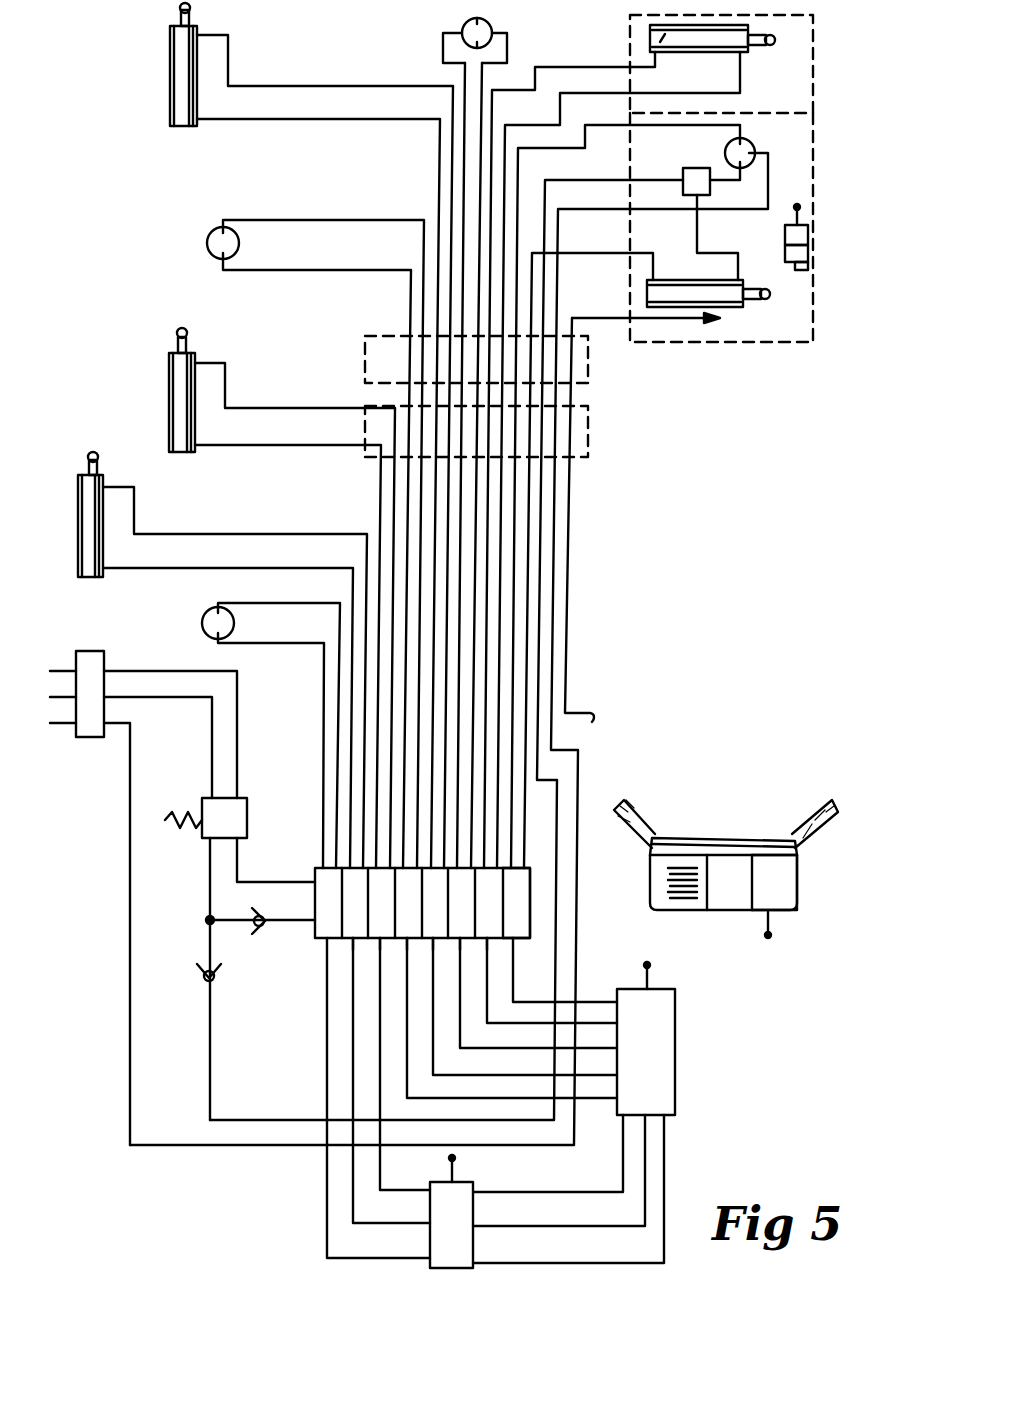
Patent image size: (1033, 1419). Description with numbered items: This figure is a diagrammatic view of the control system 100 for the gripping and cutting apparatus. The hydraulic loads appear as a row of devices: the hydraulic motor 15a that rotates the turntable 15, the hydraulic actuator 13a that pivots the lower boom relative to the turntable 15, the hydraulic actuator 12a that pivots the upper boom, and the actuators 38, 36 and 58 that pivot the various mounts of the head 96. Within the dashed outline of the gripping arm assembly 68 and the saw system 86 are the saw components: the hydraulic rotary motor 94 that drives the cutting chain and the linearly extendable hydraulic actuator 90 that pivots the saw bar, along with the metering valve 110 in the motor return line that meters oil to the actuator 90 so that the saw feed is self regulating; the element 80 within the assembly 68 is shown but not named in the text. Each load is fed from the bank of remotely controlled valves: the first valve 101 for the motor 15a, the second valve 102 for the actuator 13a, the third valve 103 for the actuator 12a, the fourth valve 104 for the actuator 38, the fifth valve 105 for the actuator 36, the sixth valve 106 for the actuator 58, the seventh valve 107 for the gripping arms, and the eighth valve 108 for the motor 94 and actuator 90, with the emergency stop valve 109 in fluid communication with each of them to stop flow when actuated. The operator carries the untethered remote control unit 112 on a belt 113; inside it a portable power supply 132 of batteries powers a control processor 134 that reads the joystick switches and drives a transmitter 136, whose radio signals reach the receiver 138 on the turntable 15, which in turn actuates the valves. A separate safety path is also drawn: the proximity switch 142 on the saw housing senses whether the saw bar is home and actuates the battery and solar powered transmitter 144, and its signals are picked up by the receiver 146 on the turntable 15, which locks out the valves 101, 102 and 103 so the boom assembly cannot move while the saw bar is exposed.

The hydraulic actuator 12a is at (170, 370).
The hydraulic actuator 13a is at (103, 480).
The turntable 15 is at (88, 748).
The hydraulic motor 15a is at (205, 616).
The actuator 36 is at (170, 63).
The actuator 38 is at (200, 244).
The actuator 58 is at (456, 26).
The assembly 68 is at (828, 63).
The actuator 80 is at (660, 38).
The saw system 86 is at (828, 160).
The hydraulic actuator 90 is at (730, 310).
The hydraulic rotary motor 94 is at (752, 146).
The head 96 is at (681, 375).
The control system 100 is at (735, 498).
The first remotely controlled valve 101 is at (315, 872).
The second remotely controlled valve 102 is at (350, 940).
The third remotely controlled valve 103 is at (377, 940).
The fourth remotely controlled valve 104 is at (405, 940).
The fifth remotely controlled valve 105 is at (431, 940).
The sixth remotely controlled valve 106 is at (467, 938).
The seventh remotely controlled valve 107 is at (493, 938).
The eighth remotely controlled valve 108 is at (525, 895).
The emergency stop valve 109 is at (247, 818).
The metering valve 110 is at (697, 168).
The remote control unit 112 is at (732, 826).
The belt 113 is at (640, 820).
The portable power supply 132 is at (670, 911).
The control processor 134 is at (730, 900).
The transmitter 136 is at (781, 905).
The receiver 138 is at (675, 1058).
The proximity switch 142 is at (810, 268).
The transmitter 144 is at (803, 235).
The receiver 146 is at (476, 1186).